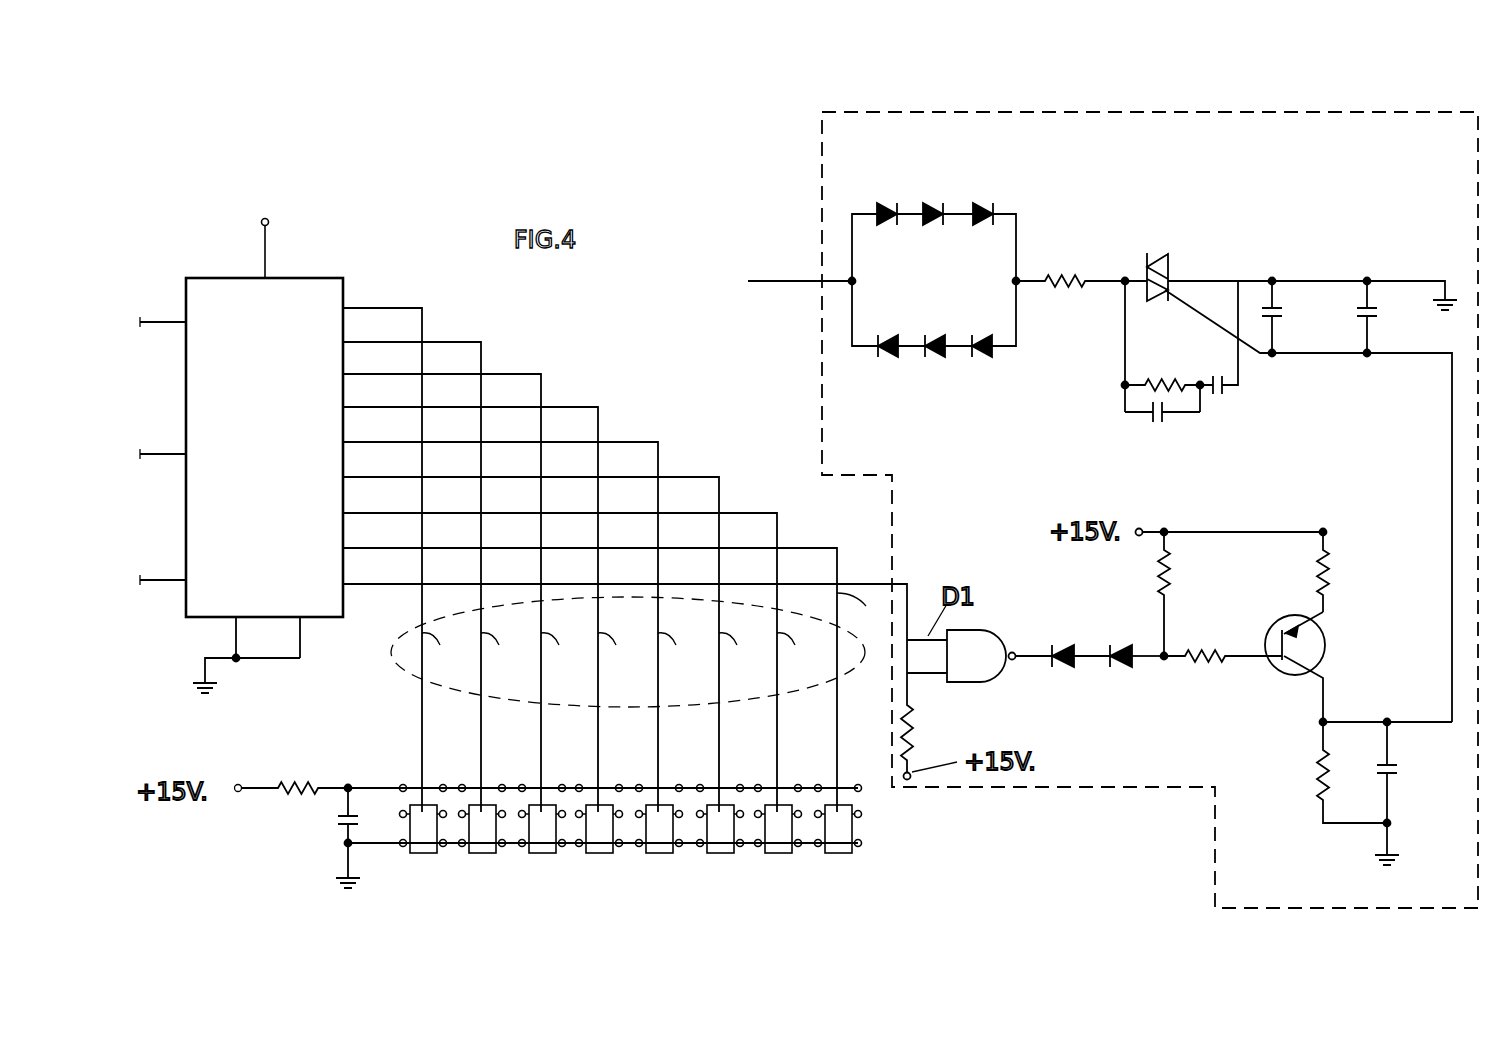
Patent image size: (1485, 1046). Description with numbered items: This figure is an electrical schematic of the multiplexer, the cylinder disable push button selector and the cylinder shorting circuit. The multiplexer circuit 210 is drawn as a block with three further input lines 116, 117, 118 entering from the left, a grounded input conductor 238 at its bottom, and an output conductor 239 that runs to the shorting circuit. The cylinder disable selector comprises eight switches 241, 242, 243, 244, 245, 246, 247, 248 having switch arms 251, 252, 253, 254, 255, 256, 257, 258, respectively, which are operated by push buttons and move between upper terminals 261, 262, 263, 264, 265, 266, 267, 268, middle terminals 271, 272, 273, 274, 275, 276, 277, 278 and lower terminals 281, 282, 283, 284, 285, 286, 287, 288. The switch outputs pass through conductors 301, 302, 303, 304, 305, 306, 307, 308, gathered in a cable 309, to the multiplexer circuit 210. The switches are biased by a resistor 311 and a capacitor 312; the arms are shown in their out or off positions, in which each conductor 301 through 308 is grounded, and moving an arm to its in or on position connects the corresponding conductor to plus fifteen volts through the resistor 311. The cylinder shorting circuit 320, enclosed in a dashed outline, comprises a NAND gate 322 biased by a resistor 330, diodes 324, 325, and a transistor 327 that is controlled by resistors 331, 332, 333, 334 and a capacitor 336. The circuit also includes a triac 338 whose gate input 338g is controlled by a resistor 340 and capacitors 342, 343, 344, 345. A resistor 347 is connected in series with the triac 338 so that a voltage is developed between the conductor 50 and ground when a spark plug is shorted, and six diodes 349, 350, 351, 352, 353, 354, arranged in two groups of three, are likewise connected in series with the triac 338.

The conductor 50 is at (788, 281).
The input line 116 is at (155, 322).
The input line 117 is at (157, 454).
The input line 118 is at (160, 580).
The multiplexer circuit 210 is at (314, 270).
The grounded input conductor 238 is at (205, 671).
The output conductor 239 is at (908, 590).
The switch 241 is at (950, 907).
The switch 242 is at (865, 933).
The switch 243 is at (733, 910).
The switch 244 is at (662, 918).
The switch 245 is at (597, 912).
The switch 246 is at (518, 918).
The switch 247 is at (447, 915).
The switch 248 is at (370, 895).
The switch arm 251 is at (845, 857).
The switch arm 252 is at (775, 857).
The switch arm 253 is at (716, 857).
The switch arm 254 is at (655, 857).
The switch arm 255 is at (594, 857).
The switch arm 256 is at (537, 857).
The switch arm 257 is at (477, 857).
The switch arm 258 is at (418, 857).
The upper terminal 261 is at (862, 790).
The upper terminal 262 is at (798, 784).
The upper terminal 263 is at (740, 784).
The upper terminal 264 is at (679, 784).
The upper terminal 265 is at (619, 784).
The upper terminal 266 is at (562, 784).
The upper terminal 267 is at (502, 784).
The upper terminal 268 is at (443, 784).
The middle terminal 271 is at (862, 816).
The middle terminal 272 is at (802, 811).
The middle terminal 273 is at (744, 811).
The middle terminal 274 is at (683, 811).
The middle terminal 275 is at (623, 811).
The middle terminal 276 is at (566, 811).
The middle terminal 277 is at (506, 811).
The middle terminal 278 is at (447, 811).
The lower terminal 281 is at (862, 845).
The lower terminal 282 is at (800, 848).
The lower terminal 283 is at (742, 848).
The lower terminal 284 is at (681, 848).
The lower terminal 285 is at (621, 848).
The lower terminal 286 is at (564, 848).
The lower terminal 287 is at (504, 848).
The lower terminal 288 is at (444, 848).
The conductor 301 is at (862, 613).
The conductor 302 is at (802, 653).
The conductor 303 is at (744, 653).
The conductor 304 is at (683, 653).
The conductor 305 is at (623, 653).
The conductor 306 is at (566, 653).
The conductor 307 is at (506, 653).
The conductor 308 is at (447, 653).
The cable 309 is at (403, 666).
The resistor 311 is at (300, 785).
The capacitor 312 is at (338, 826).
The cylinder shorting circuit 320 is at (812, 160).
The NAND gate 322 is at (990, 630).
The diode 324 is at (1075, 648).
The diode 325 is at (1122, 670).
The transistor 327 is at (1327, 650).
The resistor 330 is at (912, 728).
The resistor 331 is at (1167, 560).
The resistor 332 is at (1207, 661).
The resistor 333 is at (1328, 570).
The resistor 334 is at (1318, 770).
The capacitor 336 is at (1392, 772).
The triac 338 is at (1168, 258).
The gate input 338g is at (1292, 506).
The resistor 340 is at (1155, 380).
The capacitor 342 is at (1153, 416).
The capacitor 343 is at (1225, 393).
The capacitor 344 is at (1278, 312).
The capacitor 345 is at (1372, 312).
The resistor 347 is at (1072, 272).
The diode 349 is at (880, 356).
The diode 350 is at (937, 358).
The diode 351 is at (985, 356).
The diode 352 is at (887, 204).
The diode 353 is at (934, 204).
The diode 354 is at (985, 204).